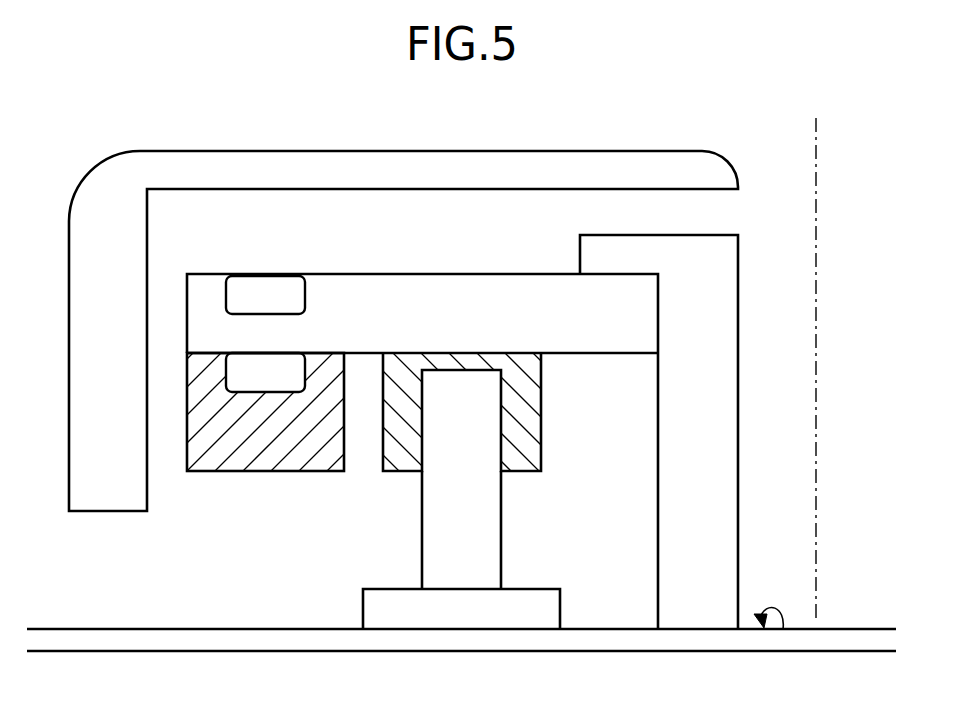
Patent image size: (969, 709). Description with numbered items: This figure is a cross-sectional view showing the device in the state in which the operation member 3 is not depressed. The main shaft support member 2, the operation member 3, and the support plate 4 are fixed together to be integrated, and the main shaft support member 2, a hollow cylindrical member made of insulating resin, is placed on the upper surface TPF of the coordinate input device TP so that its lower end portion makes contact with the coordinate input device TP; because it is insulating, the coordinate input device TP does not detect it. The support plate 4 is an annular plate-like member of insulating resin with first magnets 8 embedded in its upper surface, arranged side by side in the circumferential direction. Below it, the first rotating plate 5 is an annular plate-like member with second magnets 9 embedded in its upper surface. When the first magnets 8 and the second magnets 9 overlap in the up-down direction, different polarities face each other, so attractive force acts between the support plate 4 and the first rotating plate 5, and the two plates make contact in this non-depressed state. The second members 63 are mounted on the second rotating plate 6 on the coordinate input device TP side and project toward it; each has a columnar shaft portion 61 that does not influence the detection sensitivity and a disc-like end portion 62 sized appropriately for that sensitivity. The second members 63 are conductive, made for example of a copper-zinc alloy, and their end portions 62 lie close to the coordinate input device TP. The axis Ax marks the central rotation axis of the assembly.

The main shaft support member 2 is at (718, 255).
The operation member 3 is at (718, 168).
The support plate 4 is at (561, 290).
The first rotating plate 5 is at (208, 462).
The second rotating plate 6 is at (524, 449).
The first magnets 8 is at (293, 290).
The second magnets 9 is at (296, 360).
The shaft portion 61 is at (490, 505).
The end portion 62 is at (546, 600).
The second members 63 is at (562, 494).
The coordinate input device TP is at (638, 640).
The upper surface TPF is at (782, 632).
The rotation axis Ax is at (816, 359).